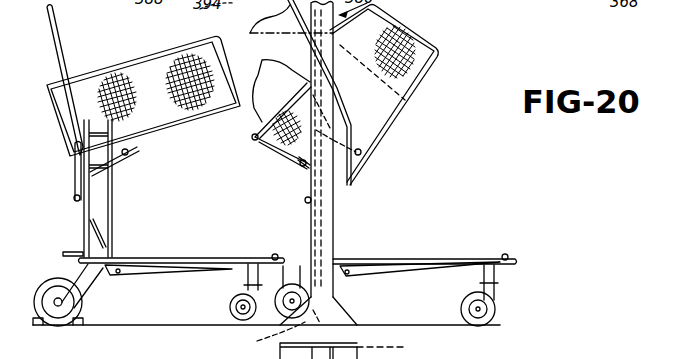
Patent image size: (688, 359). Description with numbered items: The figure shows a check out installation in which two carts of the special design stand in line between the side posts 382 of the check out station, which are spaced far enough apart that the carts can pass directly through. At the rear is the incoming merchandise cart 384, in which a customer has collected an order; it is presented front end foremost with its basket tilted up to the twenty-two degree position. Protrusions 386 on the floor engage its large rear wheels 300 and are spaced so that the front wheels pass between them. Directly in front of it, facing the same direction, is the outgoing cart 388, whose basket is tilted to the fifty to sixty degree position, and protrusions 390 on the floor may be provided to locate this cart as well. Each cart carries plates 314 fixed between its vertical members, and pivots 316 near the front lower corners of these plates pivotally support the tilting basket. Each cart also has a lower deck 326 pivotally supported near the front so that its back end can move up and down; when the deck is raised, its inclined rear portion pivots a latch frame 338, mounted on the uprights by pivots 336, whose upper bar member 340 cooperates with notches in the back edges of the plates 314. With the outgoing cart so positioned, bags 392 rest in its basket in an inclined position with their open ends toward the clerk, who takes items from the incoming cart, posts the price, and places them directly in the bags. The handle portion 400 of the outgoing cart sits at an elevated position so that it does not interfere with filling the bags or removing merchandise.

The large rear wheels 300 is at (84, 300).
The plates 314 is at (77, 150).
The pivots 316 is at (135, 152).
The lower deck 326 is at (146, 280).
The pivots 336 is at (78, 203).
The latch frame 338 is at (102, 226).
The upper bar member 340 is at (78, 172).
The side posts 382 is at (333, 30).
The merchandise cart 384 is at (134, 41).
The protrusions 386 is at (80, 323).
The outgoing cart 388 is at (452, 53).
The protrusions 390 is at (267, 328).
The bags 392 is at (278, 83).
The handle portion 400 is at (250, 33).